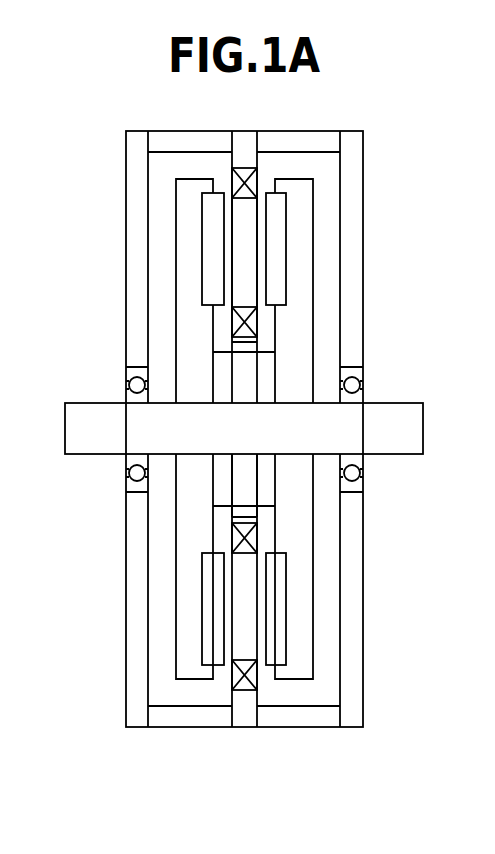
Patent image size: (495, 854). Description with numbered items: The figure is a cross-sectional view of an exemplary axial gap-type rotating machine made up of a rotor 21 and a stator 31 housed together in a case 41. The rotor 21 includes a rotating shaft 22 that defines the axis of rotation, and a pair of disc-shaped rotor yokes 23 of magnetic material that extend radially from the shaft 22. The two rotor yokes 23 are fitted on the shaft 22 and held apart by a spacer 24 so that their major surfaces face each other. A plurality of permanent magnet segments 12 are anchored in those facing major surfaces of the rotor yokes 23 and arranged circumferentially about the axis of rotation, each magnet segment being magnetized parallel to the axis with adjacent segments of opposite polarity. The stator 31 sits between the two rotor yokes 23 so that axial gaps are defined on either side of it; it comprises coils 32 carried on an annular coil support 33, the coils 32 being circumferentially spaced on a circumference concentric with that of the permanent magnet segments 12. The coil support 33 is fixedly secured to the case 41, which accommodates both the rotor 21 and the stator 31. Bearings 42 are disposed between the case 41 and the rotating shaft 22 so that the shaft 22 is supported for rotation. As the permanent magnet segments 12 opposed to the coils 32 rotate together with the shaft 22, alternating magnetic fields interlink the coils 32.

The permanent magnet segments 12 is at (283, 225).
The rotor 21 is at (317, 361).
The rotating shaft 22 is at (390, 442).
The rotor yokes 23 is at (190, 328).
The spacer 24 is at (253, 483).
The stator 31 is at (245, 142).
The coils 32 is at (237, 183).
The annular coil support 33 is at (240, 245).
The case 41 is at (355, 197).
The bearings 42 is at (128, 478).